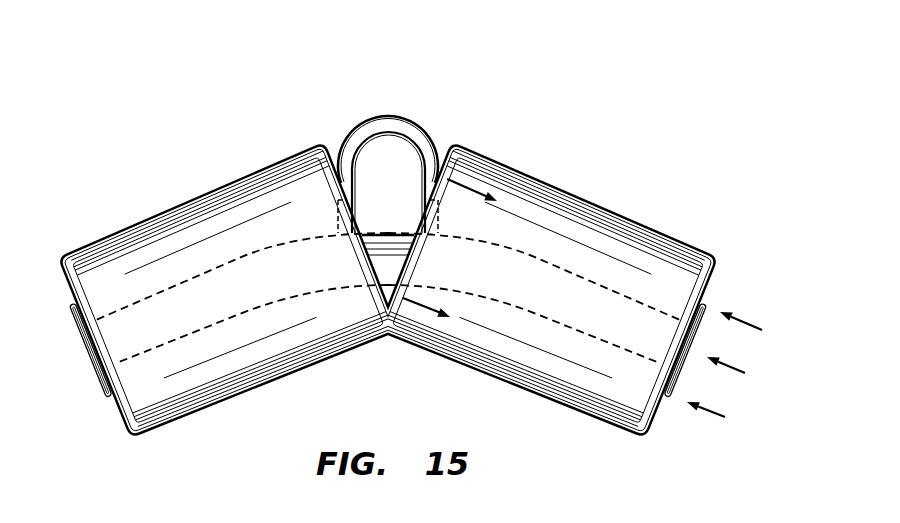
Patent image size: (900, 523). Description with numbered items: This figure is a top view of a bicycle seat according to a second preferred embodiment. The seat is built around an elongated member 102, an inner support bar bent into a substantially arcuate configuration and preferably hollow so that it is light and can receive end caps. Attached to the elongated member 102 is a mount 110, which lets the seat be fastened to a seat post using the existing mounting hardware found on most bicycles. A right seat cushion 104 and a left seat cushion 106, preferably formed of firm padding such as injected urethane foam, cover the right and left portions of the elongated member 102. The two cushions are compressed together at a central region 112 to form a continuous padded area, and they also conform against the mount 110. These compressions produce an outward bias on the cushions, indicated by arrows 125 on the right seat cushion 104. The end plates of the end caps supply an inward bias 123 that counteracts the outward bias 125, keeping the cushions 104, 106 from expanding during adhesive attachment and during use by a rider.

The elongated member 102 is at (607, 305).
The right seat cushion 104 is at (556, 200).
The left seat cushion 106 is at (224, 200).
The mount 110 is at (345, 97).
The central region 112 is at (388, 336).
The inward bias 123 is at (766, 394).
The outward bias arrows 125 is at (471, 188).